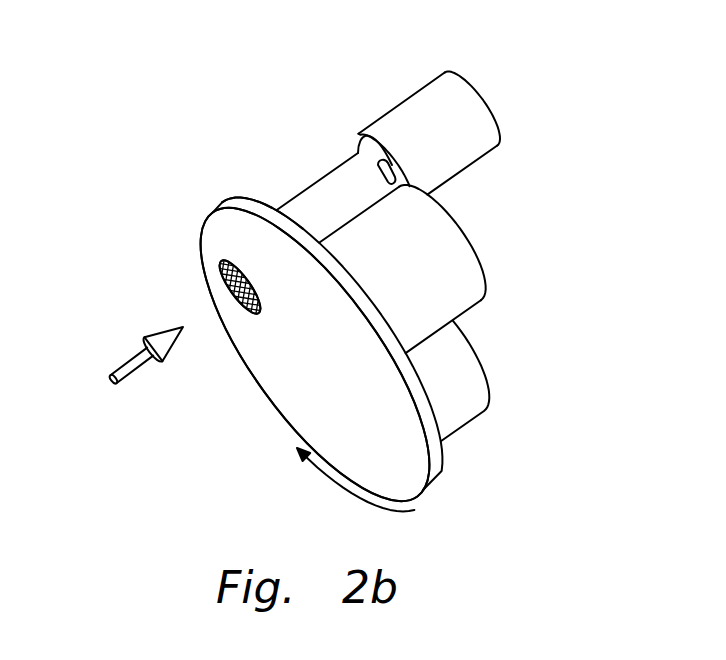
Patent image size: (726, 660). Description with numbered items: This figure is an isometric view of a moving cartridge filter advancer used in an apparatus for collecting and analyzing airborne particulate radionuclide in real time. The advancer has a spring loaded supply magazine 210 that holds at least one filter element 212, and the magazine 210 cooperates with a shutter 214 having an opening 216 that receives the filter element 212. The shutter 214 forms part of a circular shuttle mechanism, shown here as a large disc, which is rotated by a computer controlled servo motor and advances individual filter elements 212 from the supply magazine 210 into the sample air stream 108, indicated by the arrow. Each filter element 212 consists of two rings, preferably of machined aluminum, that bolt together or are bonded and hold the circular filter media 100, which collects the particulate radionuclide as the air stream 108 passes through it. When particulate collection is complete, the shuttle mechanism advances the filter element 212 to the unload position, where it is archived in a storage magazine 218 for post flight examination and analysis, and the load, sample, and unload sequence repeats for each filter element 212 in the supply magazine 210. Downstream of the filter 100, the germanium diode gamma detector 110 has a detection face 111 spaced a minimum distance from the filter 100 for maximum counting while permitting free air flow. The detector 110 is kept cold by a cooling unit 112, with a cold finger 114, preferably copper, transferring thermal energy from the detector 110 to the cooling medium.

The filter 100 is at (234, 292).
The air stream 108 is at (122, 365).
The germanium diode gamma detector 110 is at (320, 180).
The detection face 111 is at (258, 198).
The cooling unit 112 is at (432, 80).
The cold finger 114 is at (383, 143).
The supply magazine 210 is at (486, 368).
The filter element 212 is at (216, 276).
The shutter 214 is at (203, 217).
The opening 216 is at (218, 259).
The storage magazine 218 is at (468, 242).